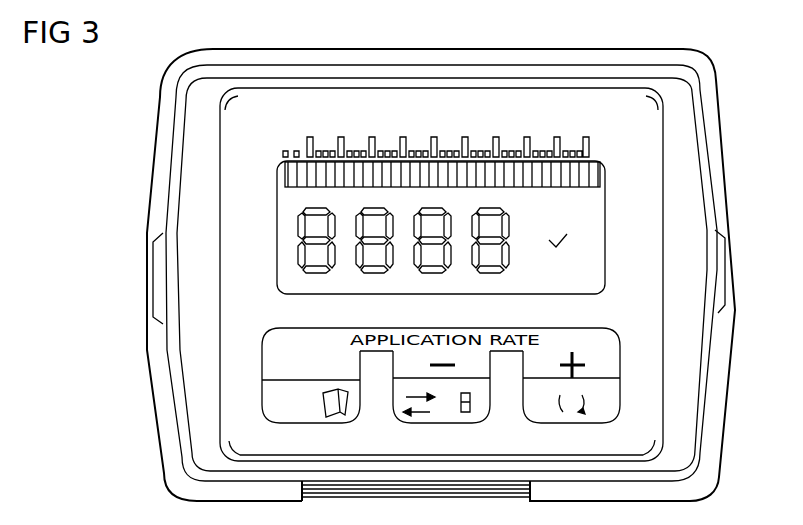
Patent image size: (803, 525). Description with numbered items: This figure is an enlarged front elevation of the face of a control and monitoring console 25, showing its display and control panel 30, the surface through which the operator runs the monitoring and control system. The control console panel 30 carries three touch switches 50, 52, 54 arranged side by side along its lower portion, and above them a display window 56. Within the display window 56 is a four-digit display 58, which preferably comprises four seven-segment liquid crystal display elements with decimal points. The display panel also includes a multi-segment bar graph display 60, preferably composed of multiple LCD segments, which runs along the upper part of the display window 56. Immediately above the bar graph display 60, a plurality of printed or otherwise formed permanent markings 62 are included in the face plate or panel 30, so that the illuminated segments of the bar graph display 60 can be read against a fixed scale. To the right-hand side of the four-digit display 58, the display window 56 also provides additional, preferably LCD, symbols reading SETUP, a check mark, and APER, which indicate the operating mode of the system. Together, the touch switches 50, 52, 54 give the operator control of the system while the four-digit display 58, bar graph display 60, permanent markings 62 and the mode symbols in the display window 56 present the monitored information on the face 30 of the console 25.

The console 25 is at (146, 236).
The display and control panel 30 is at (210, 112).
The touch switch 50 is at (346, 425).
The touch switch 52 is at (478, 425).
The touch switch 54 is at (602, 425).
The display window 56 is at (605, 283).
The four-digit display 58 is at (299, 277).
The bar graph display 60 is at (288, 170).
The permanent markings 62 is at (599, 138).